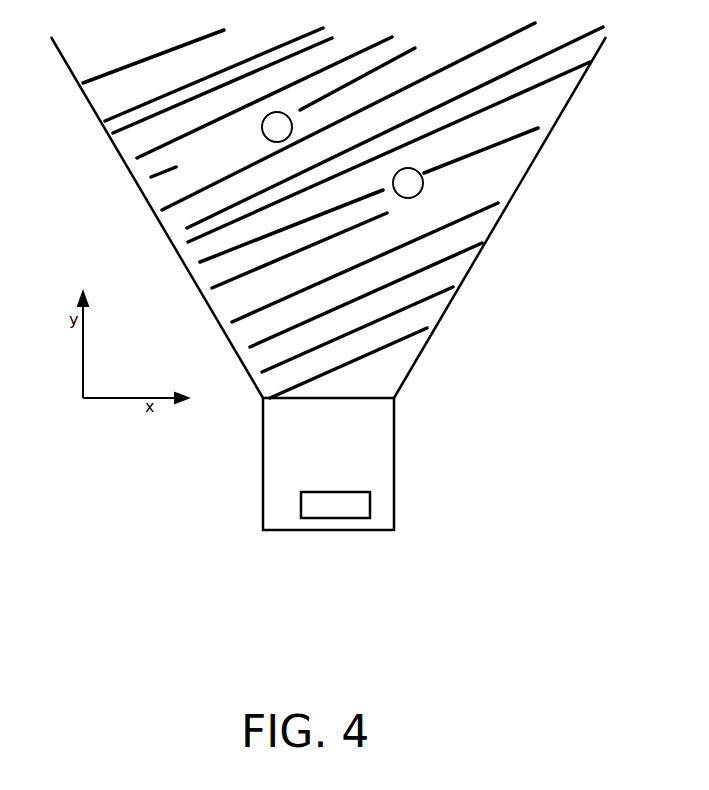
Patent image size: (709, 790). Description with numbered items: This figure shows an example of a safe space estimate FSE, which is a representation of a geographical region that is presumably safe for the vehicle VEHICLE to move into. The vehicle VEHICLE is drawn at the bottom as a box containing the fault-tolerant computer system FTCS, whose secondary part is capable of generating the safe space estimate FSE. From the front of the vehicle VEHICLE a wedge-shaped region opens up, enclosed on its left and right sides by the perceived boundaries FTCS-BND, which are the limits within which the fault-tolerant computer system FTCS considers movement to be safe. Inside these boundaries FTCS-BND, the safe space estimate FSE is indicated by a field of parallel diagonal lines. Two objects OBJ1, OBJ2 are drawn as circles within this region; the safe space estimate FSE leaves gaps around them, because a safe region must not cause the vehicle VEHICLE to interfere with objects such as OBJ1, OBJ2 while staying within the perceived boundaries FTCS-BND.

The perceived boundaries FTCS-BND is at (163, 229).
The safe space estimate FSE is at (457, 257).
The object OBJ1 is at (265, 139).
The object OBJ2 is at (423, 180).
The vehicle VEHICLE is at (395, 459).
The fault-tolerant computer system FTCS is at (370, 498).